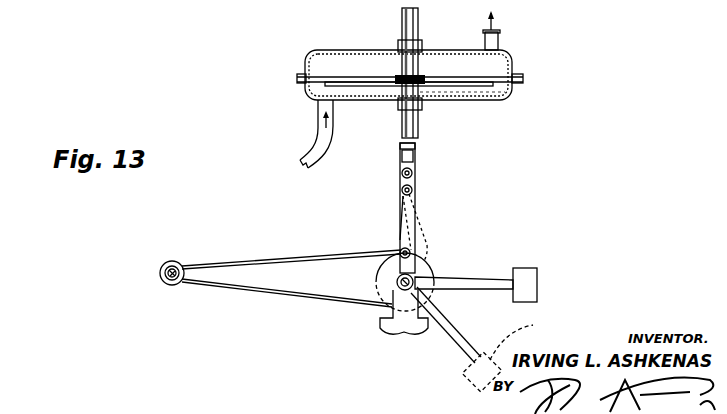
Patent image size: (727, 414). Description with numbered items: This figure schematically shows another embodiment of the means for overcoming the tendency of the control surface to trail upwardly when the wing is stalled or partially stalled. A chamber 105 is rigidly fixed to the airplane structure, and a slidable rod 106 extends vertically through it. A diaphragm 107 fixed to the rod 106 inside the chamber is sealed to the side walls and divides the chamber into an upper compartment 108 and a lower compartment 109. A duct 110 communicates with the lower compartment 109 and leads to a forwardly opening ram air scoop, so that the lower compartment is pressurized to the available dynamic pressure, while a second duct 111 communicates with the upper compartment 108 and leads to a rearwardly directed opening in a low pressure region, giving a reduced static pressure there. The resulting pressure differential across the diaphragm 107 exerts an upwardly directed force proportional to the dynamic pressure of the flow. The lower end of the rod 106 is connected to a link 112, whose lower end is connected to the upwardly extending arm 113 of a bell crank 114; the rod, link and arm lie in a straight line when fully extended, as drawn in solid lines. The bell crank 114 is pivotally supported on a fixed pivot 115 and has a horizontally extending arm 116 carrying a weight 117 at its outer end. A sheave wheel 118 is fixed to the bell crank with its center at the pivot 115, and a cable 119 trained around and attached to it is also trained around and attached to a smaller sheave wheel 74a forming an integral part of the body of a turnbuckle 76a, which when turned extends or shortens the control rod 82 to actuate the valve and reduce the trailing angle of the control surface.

The control rod 82 is at (181, 266).
The smaller sheave wheel 74a is at (162, 278).
The turnbuckle 76a is at (164, 286).
The chamber 105 is at (518, 69).
The slidable rod 106 is at (419, 16).
The diaphragm 107 is at (365, 86).
The upper compartment 108 is at (358, 63).
The lower compartment 109 is at (472, 92).
The duct 110 is at (320, 150).
The second duct 111 is at (499, 45).
The link 112 is at (414, 212).
The upwardly extending arm 113 is at (430, 249).
The bell crank 114 is at (387, 311).
The fixed pivot 115 is at (400, 251).
The horizontally extending arm 116 is at (463, 290).
The weight 117 is at (537, 280).
The sheave wheel 118 is at (432, 272).
The cable 119 is at (246, 259).